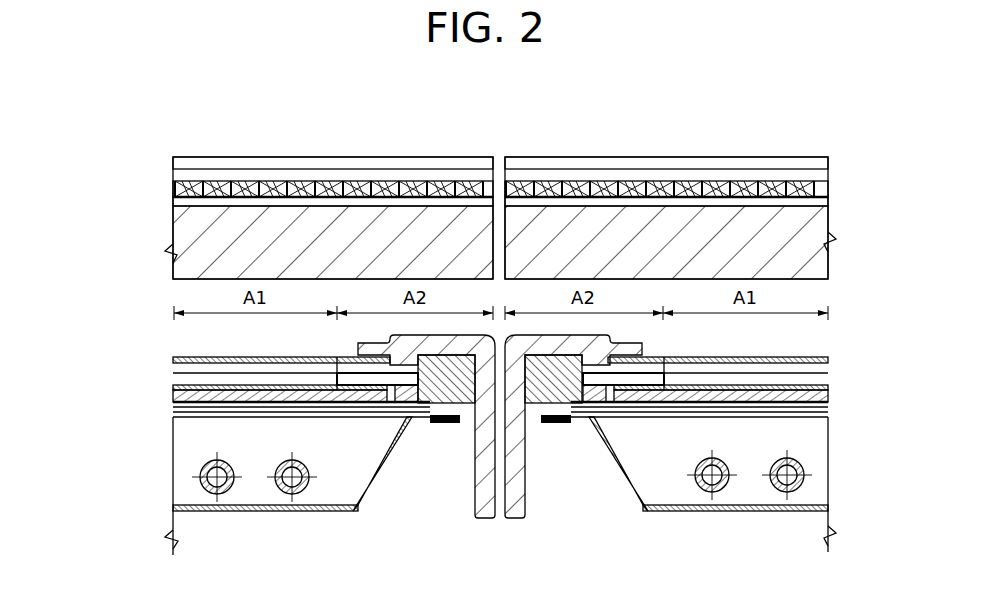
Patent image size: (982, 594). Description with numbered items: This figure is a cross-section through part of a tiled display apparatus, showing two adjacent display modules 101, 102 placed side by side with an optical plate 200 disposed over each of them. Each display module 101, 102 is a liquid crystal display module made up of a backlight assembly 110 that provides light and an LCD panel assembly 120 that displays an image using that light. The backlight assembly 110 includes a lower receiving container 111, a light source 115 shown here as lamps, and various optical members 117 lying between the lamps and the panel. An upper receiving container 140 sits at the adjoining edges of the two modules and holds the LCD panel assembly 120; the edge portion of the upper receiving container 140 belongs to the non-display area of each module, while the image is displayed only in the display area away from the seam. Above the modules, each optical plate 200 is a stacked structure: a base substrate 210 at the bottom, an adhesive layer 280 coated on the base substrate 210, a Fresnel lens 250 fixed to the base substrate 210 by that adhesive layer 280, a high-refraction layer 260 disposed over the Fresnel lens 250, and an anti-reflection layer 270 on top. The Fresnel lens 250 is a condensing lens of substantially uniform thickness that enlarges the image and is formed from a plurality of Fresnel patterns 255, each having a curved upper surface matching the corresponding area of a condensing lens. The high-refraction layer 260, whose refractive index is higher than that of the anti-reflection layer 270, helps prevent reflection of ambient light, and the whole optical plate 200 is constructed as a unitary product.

The optical plate 200 is at (104, 182).
The anti-reflection layer 270 is at (173, 162).
The high-refraction layer 260 is at (173, 185).
The Fresnel pattern 255 is at (258, 185).
The Fresnel lens 250 is at (232, 110).
The adhesive layer 280 is at (173, 201).
The base substrate 210 is at (173, 227).
The first display module 101 is at (104, 405).
The second display module 102 is at (838, 431).
The LCD panel assembly 120 is at (170, 362).
The optical members 117 is at (350, 418).
The backlight assembly 110 is at (170, 407).
The lower receiving container 111 is at (285, 512).
The light source 115 is at (220, 496).
The upper receiving container 140 is at (483, 497).